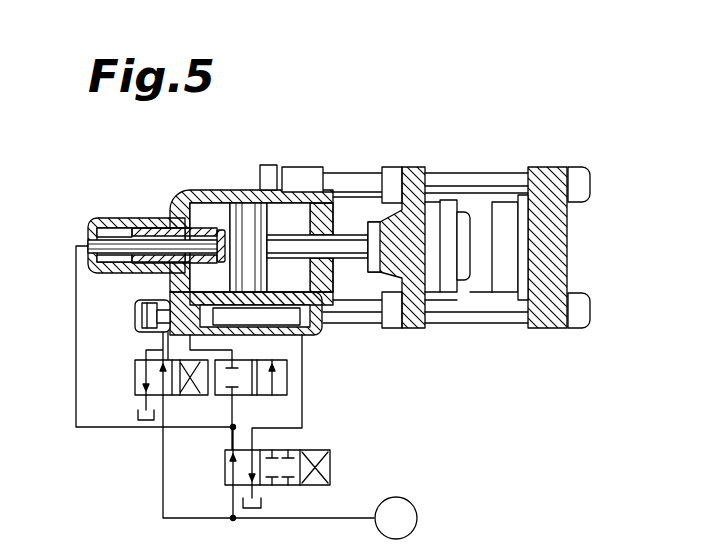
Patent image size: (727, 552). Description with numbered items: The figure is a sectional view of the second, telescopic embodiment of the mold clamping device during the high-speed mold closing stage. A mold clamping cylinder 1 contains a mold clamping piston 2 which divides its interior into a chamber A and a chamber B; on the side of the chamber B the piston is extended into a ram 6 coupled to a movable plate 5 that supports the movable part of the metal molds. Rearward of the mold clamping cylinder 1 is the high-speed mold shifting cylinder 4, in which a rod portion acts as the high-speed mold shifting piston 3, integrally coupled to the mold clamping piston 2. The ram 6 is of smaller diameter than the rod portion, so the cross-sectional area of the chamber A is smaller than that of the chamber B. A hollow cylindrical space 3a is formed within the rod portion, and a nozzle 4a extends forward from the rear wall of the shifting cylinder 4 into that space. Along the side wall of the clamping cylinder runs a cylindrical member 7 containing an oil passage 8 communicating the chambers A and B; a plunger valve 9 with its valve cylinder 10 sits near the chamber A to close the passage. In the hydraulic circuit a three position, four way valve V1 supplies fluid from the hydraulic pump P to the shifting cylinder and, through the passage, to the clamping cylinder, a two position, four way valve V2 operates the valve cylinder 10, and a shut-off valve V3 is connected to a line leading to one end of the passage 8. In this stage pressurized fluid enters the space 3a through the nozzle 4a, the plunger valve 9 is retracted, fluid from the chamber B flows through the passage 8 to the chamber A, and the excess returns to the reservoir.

The mold clamping cylinder 1 is at (223, 198).
The mold clamping piston 2 is at (244, 213).
The high-speed mold shifting piston 3 is at (163, 228).
The hollow cylindrical space 3a is at (193, 243).
The high-speed mold shifting cylinder 4 is at (121, 218).
The nozzle 4a is at (121, 218).
The movable plate 5 is at (415, 200).
The ram 6 is at (352, 238).
The cylindrical member 7 is at (315, 333).
The oil passage 8 is at (278, 318).
The plunger valve 9 is at (160, 334).
The valve cylinder 10 is at (147, 300).
The chamber A is at (212, 215).
The chamber B is at (291, 217).
The three position four way valve V1 is at (330, 470).
The two position four way valve V2 is at (135, 388).
The shut-off valve V3 is at (277, 396).
The hydraulic pump P is at (396, 518).